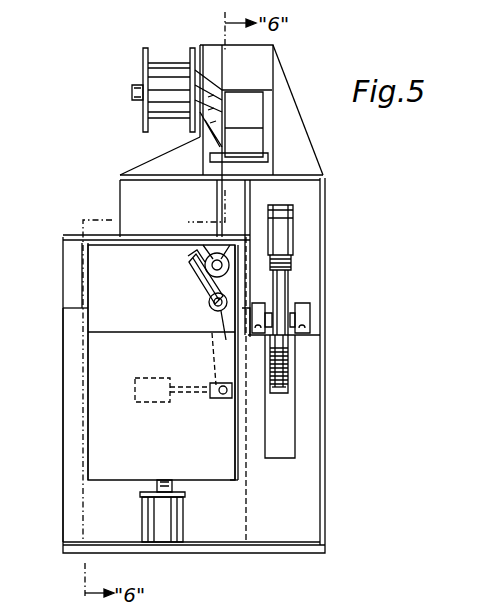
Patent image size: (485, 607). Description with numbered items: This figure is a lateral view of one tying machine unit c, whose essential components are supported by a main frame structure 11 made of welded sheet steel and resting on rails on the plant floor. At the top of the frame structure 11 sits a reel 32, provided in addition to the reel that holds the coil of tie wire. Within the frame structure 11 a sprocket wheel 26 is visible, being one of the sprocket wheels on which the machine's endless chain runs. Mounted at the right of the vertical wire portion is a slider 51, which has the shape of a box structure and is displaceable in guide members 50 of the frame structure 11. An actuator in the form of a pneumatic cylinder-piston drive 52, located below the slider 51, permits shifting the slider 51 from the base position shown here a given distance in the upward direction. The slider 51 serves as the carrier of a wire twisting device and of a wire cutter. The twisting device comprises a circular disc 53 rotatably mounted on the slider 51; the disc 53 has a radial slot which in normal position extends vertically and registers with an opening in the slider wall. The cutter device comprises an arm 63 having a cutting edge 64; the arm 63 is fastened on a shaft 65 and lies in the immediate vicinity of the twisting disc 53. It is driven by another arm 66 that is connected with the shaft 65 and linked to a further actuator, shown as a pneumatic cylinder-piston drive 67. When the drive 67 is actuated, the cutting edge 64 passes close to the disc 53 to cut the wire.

The main frame structure 11 is at (305, 513).
The sprocket wheel 26 is at (293, 270).
The reel 32 is at (160, 63).
The guide members 50 is at (68, 432).
The slider 51 is at (98, 293).
The pneumatic cylinder-piston drive 52 is at (183, 520).
The circular disc 53 is at (207, 252).
The arm 63 is at (198, 288).
The cutting edge 64 is at (192, 272).
The shaft 65 is at (213, 306).
The arm 66 is at (213, 352).
The pneumatic cylinder-piston drive 67 is at (150, 398).
The unit c is at (330, 444).